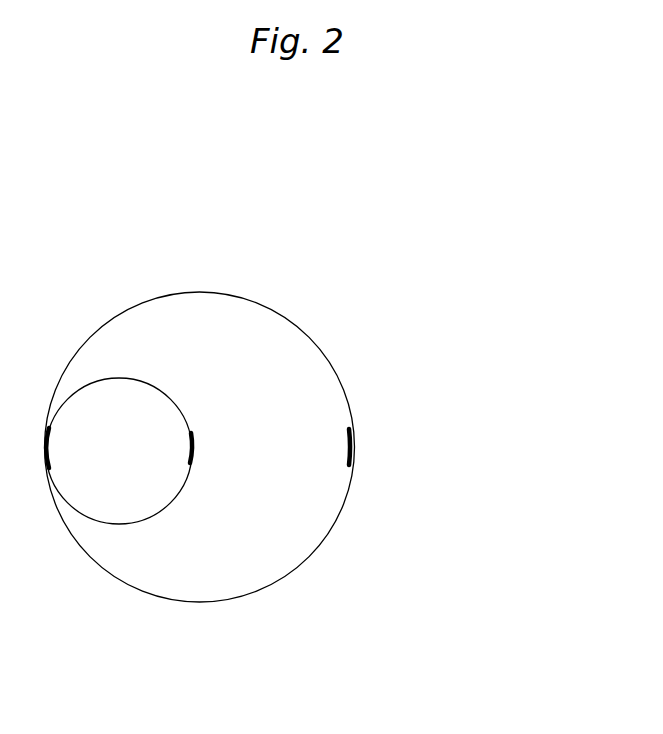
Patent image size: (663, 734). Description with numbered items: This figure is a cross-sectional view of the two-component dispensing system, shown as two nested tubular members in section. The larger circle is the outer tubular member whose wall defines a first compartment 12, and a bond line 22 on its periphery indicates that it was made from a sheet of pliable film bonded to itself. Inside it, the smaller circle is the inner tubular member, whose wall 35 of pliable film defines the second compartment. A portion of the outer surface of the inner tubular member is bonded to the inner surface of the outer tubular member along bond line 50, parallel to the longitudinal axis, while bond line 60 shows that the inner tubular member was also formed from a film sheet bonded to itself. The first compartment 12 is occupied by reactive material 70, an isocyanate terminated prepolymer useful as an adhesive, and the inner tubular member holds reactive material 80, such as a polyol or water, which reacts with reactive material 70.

The first compartment 12 is at (297, 517).
The bond line 22 is at (355, 447).
The wall 35 is at (152, 485).
The bond line 50 is at (47, 443).
The bond line 60 is at (193, 448).
The reactive material 70 is at (308, 423).
The reactive material 80 is at (139, 445).